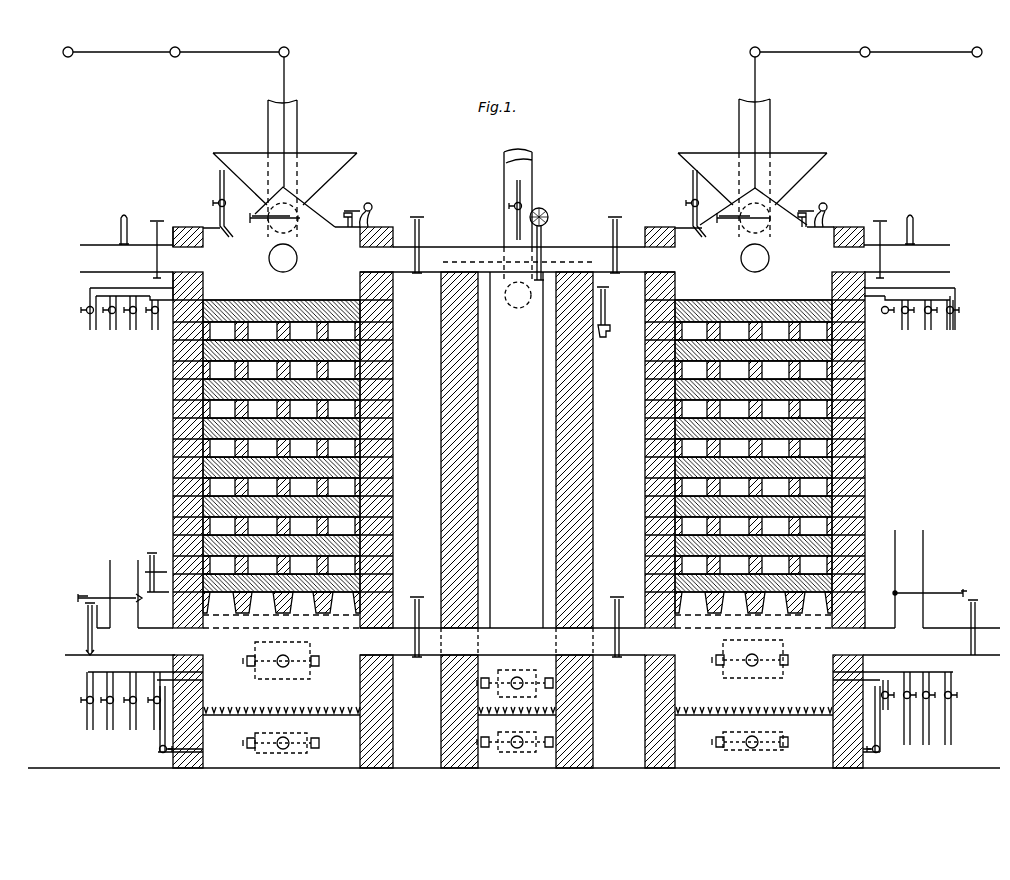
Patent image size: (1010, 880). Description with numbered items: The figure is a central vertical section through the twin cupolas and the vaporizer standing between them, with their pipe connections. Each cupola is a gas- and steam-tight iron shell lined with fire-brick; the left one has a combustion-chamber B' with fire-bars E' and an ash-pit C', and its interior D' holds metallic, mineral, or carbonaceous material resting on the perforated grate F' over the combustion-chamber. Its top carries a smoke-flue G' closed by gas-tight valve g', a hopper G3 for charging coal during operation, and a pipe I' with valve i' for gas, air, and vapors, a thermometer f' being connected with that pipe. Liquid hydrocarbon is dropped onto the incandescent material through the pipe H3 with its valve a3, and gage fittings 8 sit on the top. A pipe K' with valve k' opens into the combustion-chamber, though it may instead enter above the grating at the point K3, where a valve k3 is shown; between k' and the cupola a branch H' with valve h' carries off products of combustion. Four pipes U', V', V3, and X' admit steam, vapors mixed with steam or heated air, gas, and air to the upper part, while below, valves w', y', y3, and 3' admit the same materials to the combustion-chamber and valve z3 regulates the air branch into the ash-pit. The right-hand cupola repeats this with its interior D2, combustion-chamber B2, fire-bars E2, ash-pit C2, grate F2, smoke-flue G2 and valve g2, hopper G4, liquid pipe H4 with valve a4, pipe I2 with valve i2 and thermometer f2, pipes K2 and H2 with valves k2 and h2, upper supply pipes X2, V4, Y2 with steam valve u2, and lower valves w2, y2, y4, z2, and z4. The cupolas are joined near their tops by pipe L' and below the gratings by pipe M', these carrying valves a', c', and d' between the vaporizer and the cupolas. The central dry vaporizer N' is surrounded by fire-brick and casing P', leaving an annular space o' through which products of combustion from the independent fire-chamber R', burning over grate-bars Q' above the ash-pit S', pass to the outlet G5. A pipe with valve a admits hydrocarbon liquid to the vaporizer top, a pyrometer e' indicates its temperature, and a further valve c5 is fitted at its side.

The smoke-flue G' is at (295, 186).
The smoke-flue G2 is at (771, 128).
The hopper G3 is at (285, 190).
The hopper of second retort G4 is at (752, 189).
The outlet G5 is at (519, 241).
The branch H' is at (189, 451).
The branch H2 is at (831, 451).
The pipe H3 is at (218, 178).
The pipe H4 is at (691, 178).
The gas-tight valve g' is at (274, 227).
The gas-tight valve g2 is at (743, 227).
The valve pipe a3 is at (229, 203).
The valve pipe a4 is at (702, 203).
The valve a' is at (423, 243).
The valve a is at (510, 205).
The pyrometer e' is at (547, 240).
The gauge 8 is at (591, 209).
The pipe I' is at (125, 258).
The pipe I2 is at (942, 271).
The valve i' is at (150, 245).
The valve i2 is at (885, 247).
The thermometer f' is at (114, 224).
The thermometer f2 is at (917, 229).
The pipe U' is at (126, 323).
The pipe V' is at (109, 327).
The pipe V3 is at (132, 327).
The pipe X' is at (153, 329).
The pipe X2 is at (909, 313).
The valve branch V4 is at (913, 313).
The pipe Y2 is at (937, 313).
The valve u2 is at (961, 329).
The cupola interior D' is at (283, 450).
The cupola interior D2 is at (755, 450).
The pipe L' is at (517, 250).
The vaporizer N' is at (517, 520).
The annular space o' is at (535, 420).
The flue wall P' is at (547, 437).
The valve c5 is at (608, 300).
The pipe M' is at (517, 641).
The valve c' is at (416, 618).
The valve d' is at (617, 618).
The perforated grate F' is at (268, 625).
The perforated grate F2 is at (707, 625).
The fire-bars E' is at (281, 701).
The fire-bars E2 is at (754, 701).
The fire-chamber R' is at (516, 685).
The grate-bars Q' is at (515, 734).
The base S' is at (508, 776).
The combustion-chamber B' is at (295, 655).
The ash-pit C' is at (288, 737).
The combustion-chamber B2 is at (764, 652).
The ash-pit C2 is at (750, 749).
The valve k3 is at (156, 562).
The point K3 is at (155, 601).
The valve h' is at (100, 592).
The valve k' is at (82, 629).
The pipe K' is at (72, 645).
The valve h2 is at (937, 586).
The valve k2 is at (982, 627).
The pipe K2 is at (883, 611).
The valve w' is at (134, 710).
The valve y' is at (108, 701).
The valve y3 is at (132, 701).
The valve 3' is at (156, 692).
The valve z3 is at (166, 726).
The valve w2 is at (907, 711).
The valve y2 is at (937, 711).
The valve y4 is at (911, 711).
The valve z2 is at (880, 695).
The valve z4 is at (870, 737).